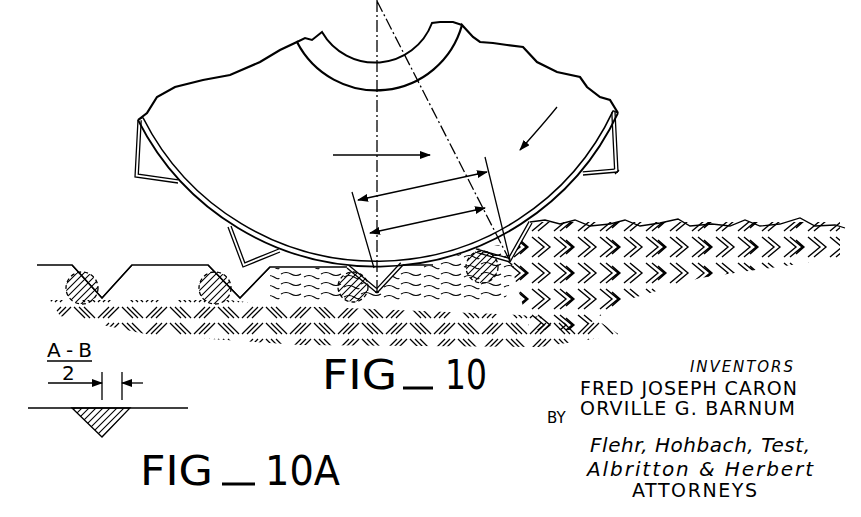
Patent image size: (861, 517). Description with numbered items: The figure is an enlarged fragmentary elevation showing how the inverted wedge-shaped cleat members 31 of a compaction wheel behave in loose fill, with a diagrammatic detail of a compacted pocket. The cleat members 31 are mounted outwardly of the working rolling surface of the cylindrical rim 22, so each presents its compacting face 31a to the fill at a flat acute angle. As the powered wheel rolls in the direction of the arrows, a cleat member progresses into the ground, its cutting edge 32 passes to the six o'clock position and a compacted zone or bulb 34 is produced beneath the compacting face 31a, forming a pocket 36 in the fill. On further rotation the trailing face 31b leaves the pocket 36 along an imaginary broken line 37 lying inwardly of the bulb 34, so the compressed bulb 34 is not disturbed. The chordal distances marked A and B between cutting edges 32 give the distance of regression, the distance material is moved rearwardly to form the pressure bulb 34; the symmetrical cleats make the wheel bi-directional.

In FIG. 10, the cylindrical rim 22 is at (162, 147).
In FIG. 10, the cleat member 31 is at (135, 171).
In FIG. 10, the compacting face 31a is at (598, 178).
In FIG. 10, the trailing face 31b is at (616, 147).
In FIG. 10, the cutting edge 32 is at (617, 176).
In FIG. 10, the compacted zone or bulb 34 is at (343, 300).
In FIG. 10, the pocket 36 is at (90, 283).
In FIG. 10, the imaginary broken line 37 is at (228, 272).
In FIG. 10A, the imaginary broken line 37 is at (125, 411).